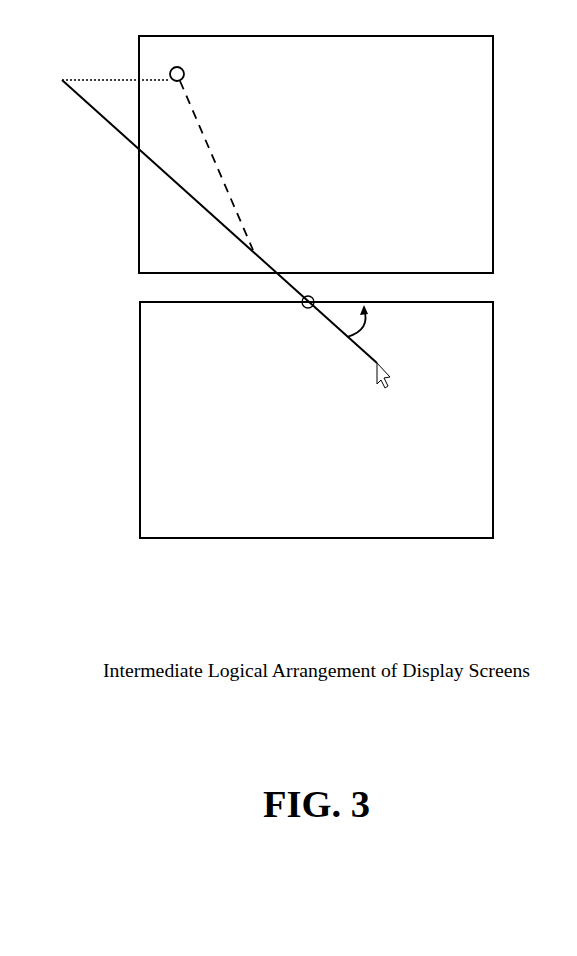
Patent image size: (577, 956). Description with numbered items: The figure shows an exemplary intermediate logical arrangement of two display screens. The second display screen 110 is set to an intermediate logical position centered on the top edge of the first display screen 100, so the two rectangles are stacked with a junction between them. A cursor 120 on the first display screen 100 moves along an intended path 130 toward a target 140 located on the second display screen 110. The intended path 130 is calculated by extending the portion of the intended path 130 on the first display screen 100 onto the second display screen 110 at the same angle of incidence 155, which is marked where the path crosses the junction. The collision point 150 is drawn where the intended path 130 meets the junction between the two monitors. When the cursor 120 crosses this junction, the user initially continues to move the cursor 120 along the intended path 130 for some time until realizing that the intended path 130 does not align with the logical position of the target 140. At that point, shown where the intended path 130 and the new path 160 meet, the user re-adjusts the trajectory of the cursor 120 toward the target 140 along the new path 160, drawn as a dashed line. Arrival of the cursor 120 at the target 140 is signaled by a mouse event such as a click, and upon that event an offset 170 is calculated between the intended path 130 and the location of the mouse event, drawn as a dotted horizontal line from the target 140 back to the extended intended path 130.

The first display screen 100 is at (316, 420).
The second display screen 110 is at (316, 154).
The cursor 120 is at (408, 375).
The intended path 130 is at (219, 221).
The target 140 is at (199, 74).
The collision point 150 is at (304, 306).
The angle of incidence 155 is at (370, 321).
The new path 160 is at (216, 165).
The offset 170 is at (116, 68).